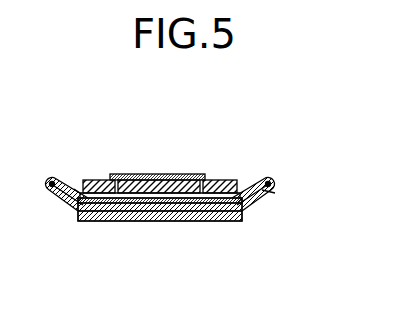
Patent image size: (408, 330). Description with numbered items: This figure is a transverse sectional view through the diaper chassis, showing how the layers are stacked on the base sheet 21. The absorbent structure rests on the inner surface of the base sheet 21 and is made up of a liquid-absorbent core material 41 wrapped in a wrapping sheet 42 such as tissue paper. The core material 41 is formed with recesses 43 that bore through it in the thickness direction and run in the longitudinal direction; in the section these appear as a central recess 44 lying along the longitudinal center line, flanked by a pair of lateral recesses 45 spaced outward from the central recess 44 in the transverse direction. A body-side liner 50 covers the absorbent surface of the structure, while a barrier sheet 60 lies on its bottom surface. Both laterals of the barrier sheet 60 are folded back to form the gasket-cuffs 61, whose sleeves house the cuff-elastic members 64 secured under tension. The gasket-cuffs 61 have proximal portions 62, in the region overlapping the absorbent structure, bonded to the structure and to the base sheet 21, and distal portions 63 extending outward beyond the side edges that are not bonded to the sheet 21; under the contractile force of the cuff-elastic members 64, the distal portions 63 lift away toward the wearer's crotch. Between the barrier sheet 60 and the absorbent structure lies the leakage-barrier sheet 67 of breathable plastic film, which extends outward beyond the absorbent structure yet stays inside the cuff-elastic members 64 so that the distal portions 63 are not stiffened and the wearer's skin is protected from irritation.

The base sheet 21 is at (113, 221).
The liquid-absorbent core material 41 is at (230, 221).
The wrapping sheet 42 is at (226, 192).
The recesses 43 is at (159, 129).
The central recess 44 is at (152, 180).
The lateral recesses 45 is at (113, 180).
The body-side liner 50 is at (203, 177).
The barrier sheet 60 is at (210, 207).
The gasket-cuffs 61 is at (210, 172).
The proximal portions 62 is at (240, 181).
The distal portions 63 is at (257, 182).
The cuff-elastic members 64 is at (256, 207).
The leakage-barrier sheet 67 is at (162, 221).